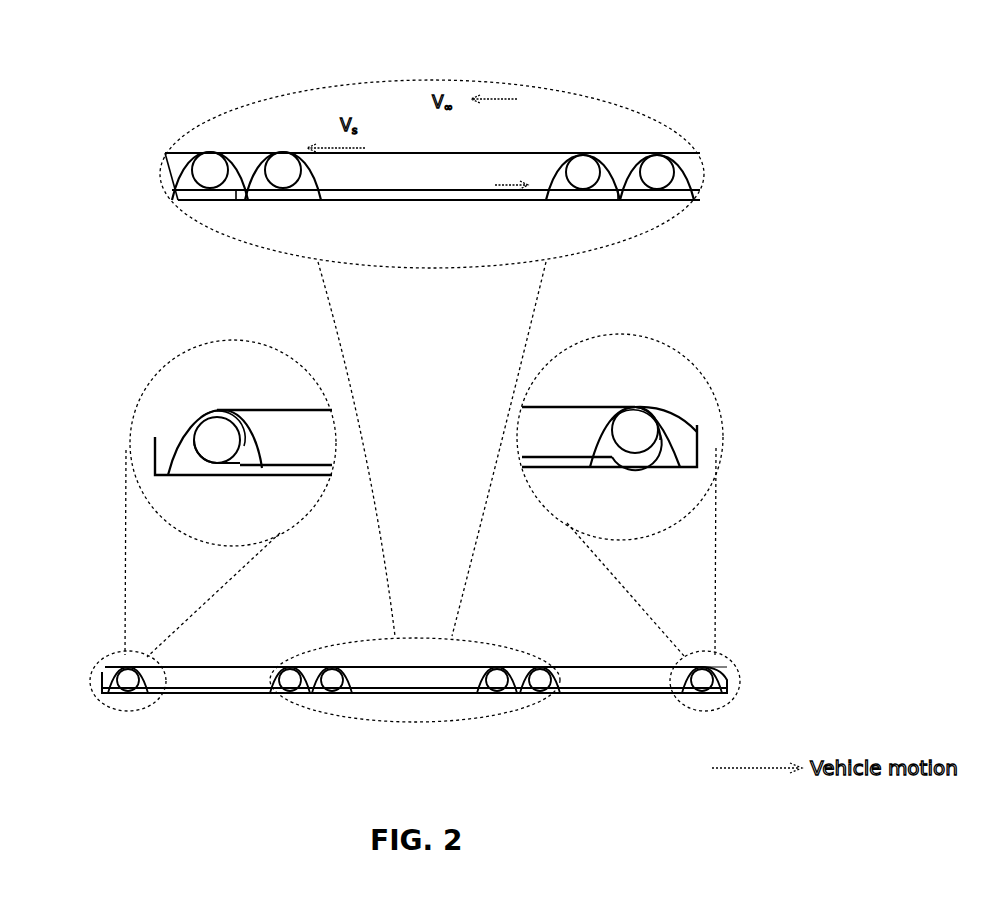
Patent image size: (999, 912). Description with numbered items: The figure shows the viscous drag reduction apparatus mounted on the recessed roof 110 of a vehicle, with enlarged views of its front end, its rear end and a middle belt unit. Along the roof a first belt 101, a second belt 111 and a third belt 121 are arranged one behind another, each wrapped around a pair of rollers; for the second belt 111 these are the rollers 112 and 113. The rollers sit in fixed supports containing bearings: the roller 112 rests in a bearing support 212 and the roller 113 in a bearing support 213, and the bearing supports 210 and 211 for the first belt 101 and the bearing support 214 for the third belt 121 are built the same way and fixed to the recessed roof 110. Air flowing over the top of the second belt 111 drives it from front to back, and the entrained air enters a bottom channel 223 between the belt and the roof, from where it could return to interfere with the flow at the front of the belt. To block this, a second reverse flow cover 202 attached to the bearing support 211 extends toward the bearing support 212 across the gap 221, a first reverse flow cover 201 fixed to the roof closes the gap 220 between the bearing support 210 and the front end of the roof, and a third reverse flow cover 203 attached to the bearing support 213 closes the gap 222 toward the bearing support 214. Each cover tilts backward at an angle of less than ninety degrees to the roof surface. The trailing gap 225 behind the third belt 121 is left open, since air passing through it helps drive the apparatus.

The first belt 101 is at (617, 660).
The recessed roof 110 is at (575, 697).
The second belt 111 is at (404, 150).
The roller 112 is at (620, 190).
The roller 113 is at (262, 150).
The third belt 121 is at (240, 653).
The first reverse flow cover 201 is at (667, 410).
The second reverse flow cover 202 is at (660, 152).
The third reverse flow cover 203 is at (232, 152).
The bearing support 210 is at (660, 448).
The bearing support 211 is at (648, 203).
The bearing support 212 is at (583, 170).
The bearing support 213 is at (283, 168).
The bearing support 214 is at (220, 202).
The gap 220 is at (673, 437).
The gap 221 is at (618, 200).
The gap 222 is at (247, 200).
The bottom channel 223 is at (367, 200).
The gap 225 is at (172, 438).